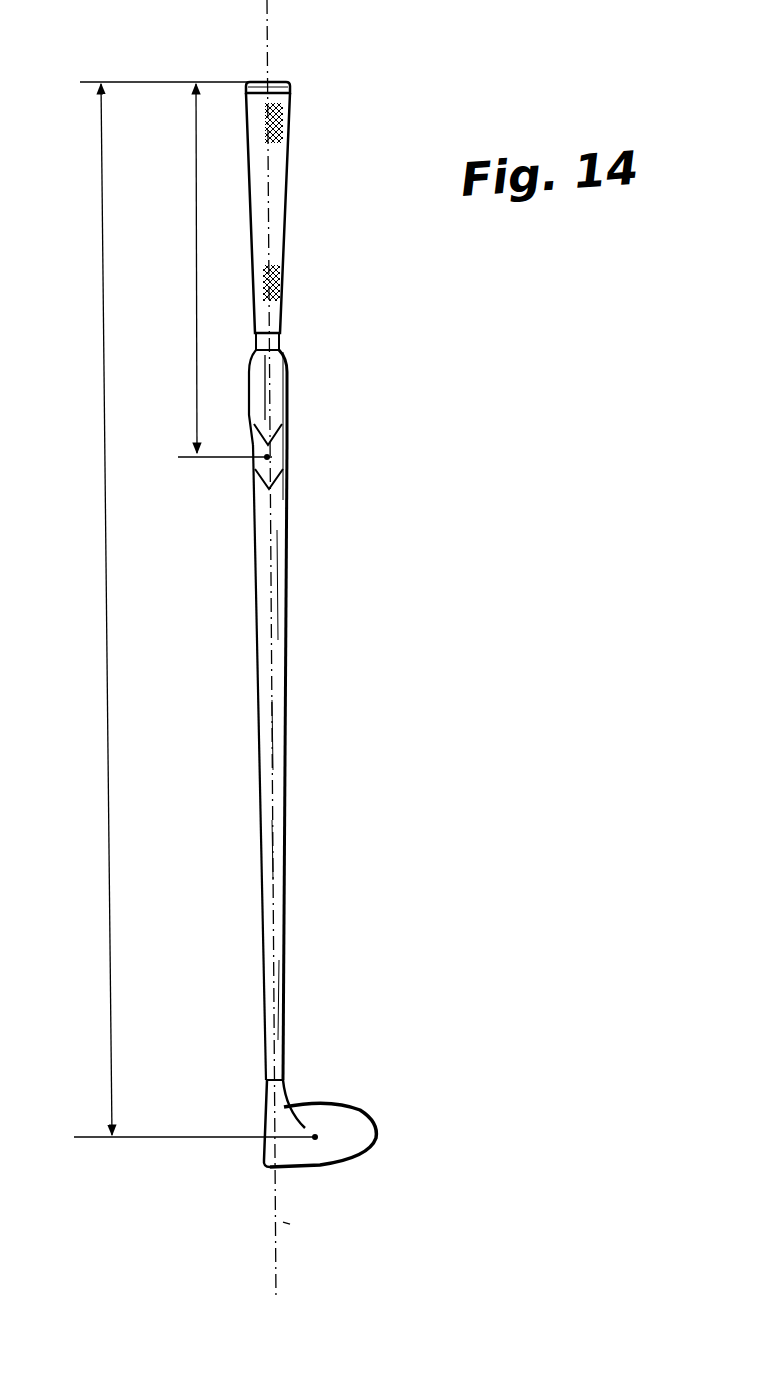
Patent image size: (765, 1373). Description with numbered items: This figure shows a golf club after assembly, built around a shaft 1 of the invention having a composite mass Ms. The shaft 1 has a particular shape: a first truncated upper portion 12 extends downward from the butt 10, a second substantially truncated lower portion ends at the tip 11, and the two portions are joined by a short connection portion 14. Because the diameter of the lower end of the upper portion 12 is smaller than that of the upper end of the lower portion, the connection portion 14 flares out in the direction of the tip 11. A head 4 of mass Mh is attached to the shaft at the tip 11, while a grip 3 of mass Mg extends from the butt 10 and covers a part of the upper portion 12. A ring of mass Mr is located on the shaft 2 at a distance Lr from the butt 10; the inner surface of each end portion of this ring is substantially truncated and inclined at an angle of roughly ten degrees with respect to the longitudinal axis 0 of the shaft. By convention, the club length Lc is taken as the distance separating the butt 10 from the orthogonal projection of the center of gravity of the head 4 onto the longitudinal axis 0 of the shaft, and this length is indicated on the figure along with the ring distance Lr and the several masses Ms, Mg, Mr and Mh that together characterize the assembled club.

The shaft 1 is at (332, 714).
The shaft 2 is at (286, 443).
The grip 3 is at (289, 136).
The head 4 is at (339, 1146).
The butt 10 is at (277, 82).
The tip 11 is at (281, 1037).
The first truncated upper portion 12 is at (280, 342).
The connection portion 14 is at (286, 359).
The longitudinal axis 0 is at (297, 1240).
The grip mass Mg is at (294, 229).
The ring mass Mr is at (289, 457).
The shaft mass Ms is at (292, 645).
The head mass Mh is at (359, 1106).
The club length Lc is at (81, 609).
The ring distance Lr is at (209, 272).